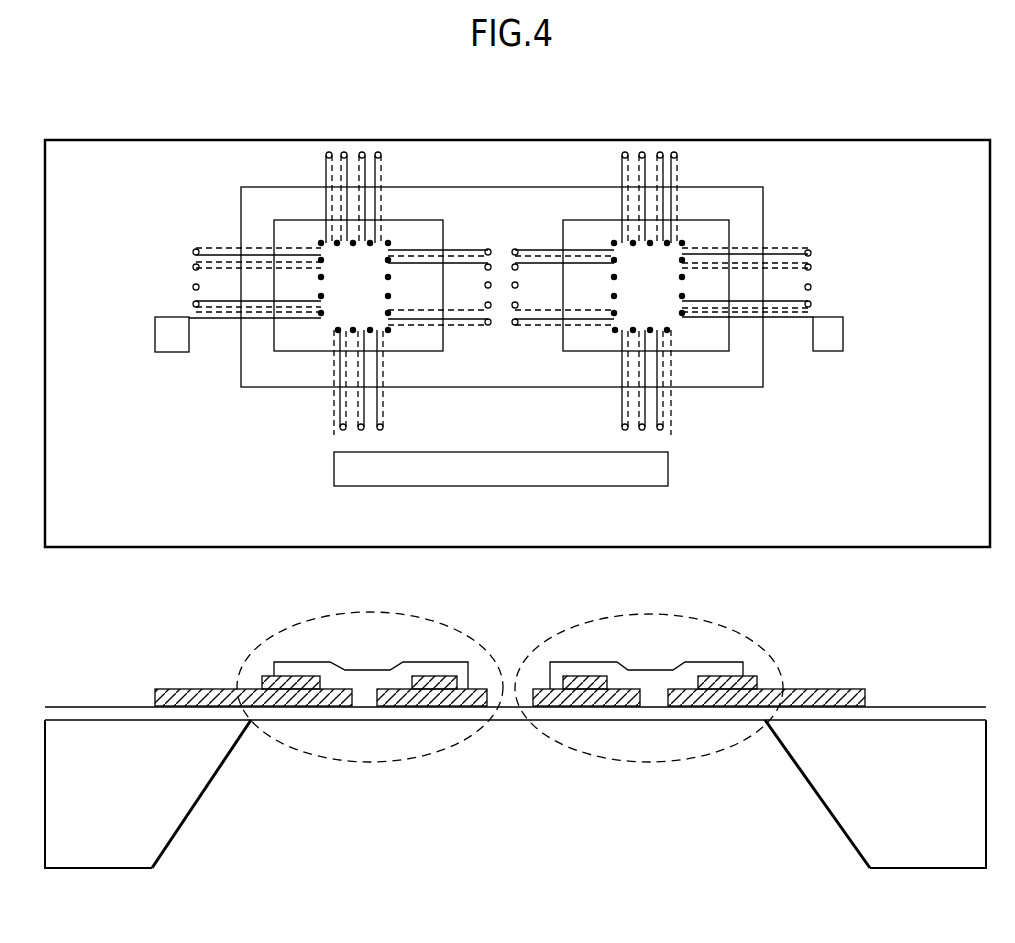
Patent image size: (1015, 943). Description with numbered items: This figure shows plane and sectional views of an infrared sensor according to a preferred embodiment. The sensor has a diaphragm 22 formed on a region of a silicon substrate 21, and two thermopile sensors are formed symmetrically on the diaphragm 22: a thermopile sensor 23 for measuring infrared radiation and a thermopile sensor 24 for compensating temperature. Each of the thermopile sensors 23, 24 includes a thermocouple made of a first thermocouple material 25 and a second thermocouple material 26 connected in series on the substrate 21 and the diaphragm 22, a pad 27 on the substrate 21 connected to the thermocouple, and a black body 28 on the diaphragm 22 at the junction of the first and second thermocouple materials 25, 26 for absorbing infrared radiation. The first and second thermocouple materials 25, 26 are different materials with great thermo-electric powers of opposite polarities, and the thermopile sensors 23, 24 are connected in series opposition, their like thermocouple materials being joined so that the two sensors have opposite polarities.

The silicon substrate 21 is at (86, 530).
The diaphragm 22 is at (243, 208).
The thermopile sensor for measuring an infrared radiation 23 is at (356, 738).
The thermopile sensor for compensating a temperature 24 is at (647, 735).
The first thermocouple material 25 is at (257, 312).
The second thermocouple material 26 is at (332, 413).
The pad 27 is at (828, 335).
The black body 28 is at (607, 337).